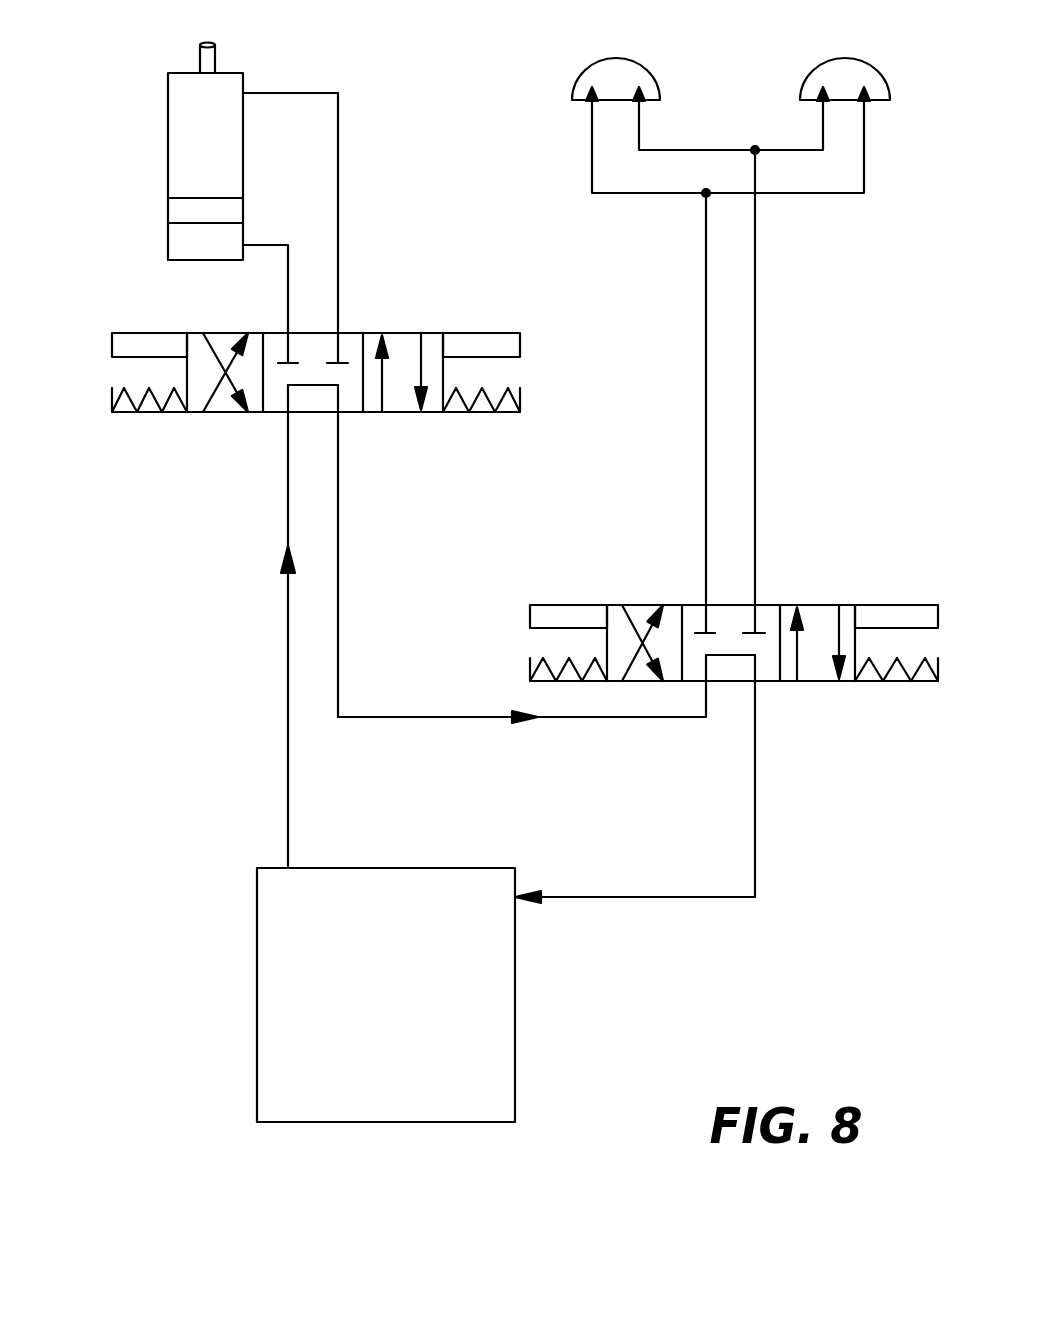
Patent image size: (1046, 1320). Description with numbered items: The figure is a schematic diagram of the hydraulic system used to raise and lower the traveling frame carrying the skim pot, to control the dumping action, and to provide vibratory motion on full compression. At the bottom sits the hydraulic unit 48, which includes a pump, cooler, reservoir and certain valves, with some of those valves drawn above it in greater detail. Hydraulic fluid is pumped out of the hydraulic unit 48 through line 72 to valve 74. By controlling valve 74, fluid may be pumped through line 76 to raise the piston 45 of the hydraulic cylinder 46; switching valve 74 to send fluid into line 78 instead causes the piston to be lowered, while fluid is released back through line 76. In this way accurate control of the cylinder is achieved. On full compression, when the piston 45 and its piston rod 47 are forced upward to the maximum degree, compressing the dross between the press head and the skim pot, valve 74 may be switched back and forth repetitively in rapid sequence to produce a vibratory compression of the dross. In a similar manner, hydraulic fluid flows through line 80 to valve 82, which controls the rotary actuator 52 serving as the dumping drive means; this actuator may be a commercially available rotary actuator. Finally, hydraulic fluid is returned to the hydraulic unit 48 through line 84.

The piston 45 is at (177, 212).
The hydraulic cylinder 46 is at (168, 137).
The piston rod 47 is at (217, 53).
The hydraulic unit 48 is at (515, 995).
The rotary actuator 52 is at (805, 68).
The line 72 is at (287, 770).
The valve 74 is at (267, 413).
The line 76 is at (285, 257).
The line 78 is at (338, 200).
The line 80 is at (457, 715).
The valve 82 is at (792, 685).
The line 84 is at (753, 852).